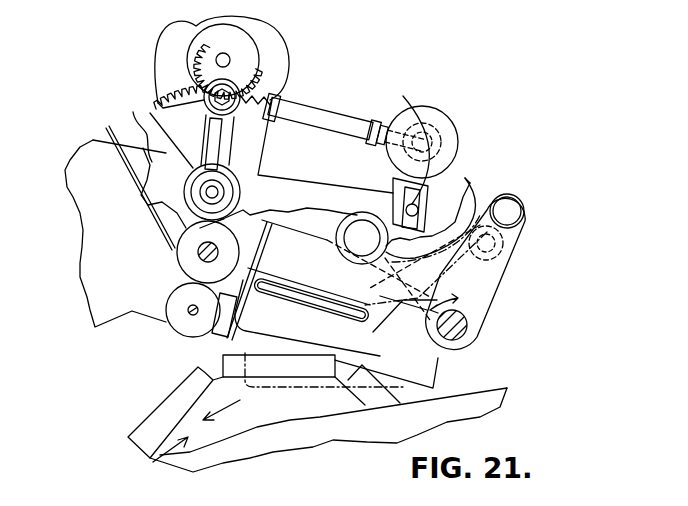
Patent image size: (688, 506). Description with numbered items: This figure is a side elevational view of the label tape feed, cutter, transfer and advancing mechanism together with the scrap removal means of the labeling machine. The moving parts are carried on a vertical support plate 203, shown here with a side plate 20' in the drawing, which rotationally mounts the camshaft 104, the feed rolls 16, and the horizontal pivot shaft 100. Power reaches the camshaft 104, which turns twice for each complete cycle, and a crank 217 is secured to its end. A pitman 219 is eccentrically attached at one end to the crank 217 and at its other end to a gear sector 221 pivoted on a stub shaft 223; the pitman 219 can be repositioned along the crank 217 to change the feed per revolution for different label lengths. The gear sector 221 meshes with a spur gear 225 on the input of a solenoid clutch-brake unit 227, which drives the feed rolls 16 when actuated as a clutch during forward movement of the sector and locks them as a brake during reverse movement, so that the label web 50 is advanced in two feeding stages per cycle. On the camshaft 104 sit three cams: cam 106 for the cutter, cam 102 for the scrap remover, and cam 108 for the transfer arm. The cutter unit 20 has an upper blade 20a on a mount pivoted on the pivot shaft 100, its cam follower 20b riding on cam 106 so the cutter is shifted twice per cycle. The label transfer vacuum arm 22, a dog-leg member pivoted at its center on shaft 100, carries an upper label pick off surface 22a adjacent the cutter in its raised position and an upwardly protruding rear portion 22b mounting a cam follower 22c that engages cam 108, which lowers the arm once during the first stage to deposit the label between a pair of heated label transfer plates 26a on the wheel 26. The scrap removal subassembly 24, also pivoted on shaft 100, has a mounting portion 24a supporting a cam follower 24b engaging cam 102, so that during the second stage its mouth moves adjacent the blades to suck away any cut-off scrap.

The feed rolls 16 is at (168, 300).
The cutter unit 20 is at (285, 220).
The side plate 20' is at (114, 233).
The upper blade 20a is at (262, 247).
The cam follower 20b is at (367, 223).
The label transfer vacuum arm 22 is at (438, 370).
The label pick off surface 22a is at (318, 318).
The rear portion 22b is at (490, 241).
The cam follower 22c is at (508, 212).
The scrap removal subassembly 24 is at (304, 278).
The mounting portion 24a is at (490, 274).
The cam follower 24b is at (500, 252).
The wheel 26 is at (165, 455).
The label transfer plates 26a is at (281, 364).
The label web 50 is at (110, 130).
The horizontal pivot shaft 100 is at (462, 326).
The cam 102 is at (475, 173).
The shaft 104 is at (440, 160).
The cam 106 is at (457, 187).
The cam 108 is at (508, 179).
The vertical support plate 203 is at (136, 128).
The crank 217 is at (398, 126).
The pitman 219 is at (307, 112).
The gear sector 221 is at (189, 134).
The stub shaft 223 is at (214, 190).
The spur gear 225 is at (247, 60).
The solenoid clutch-brake unit 227 is at (292, 84).